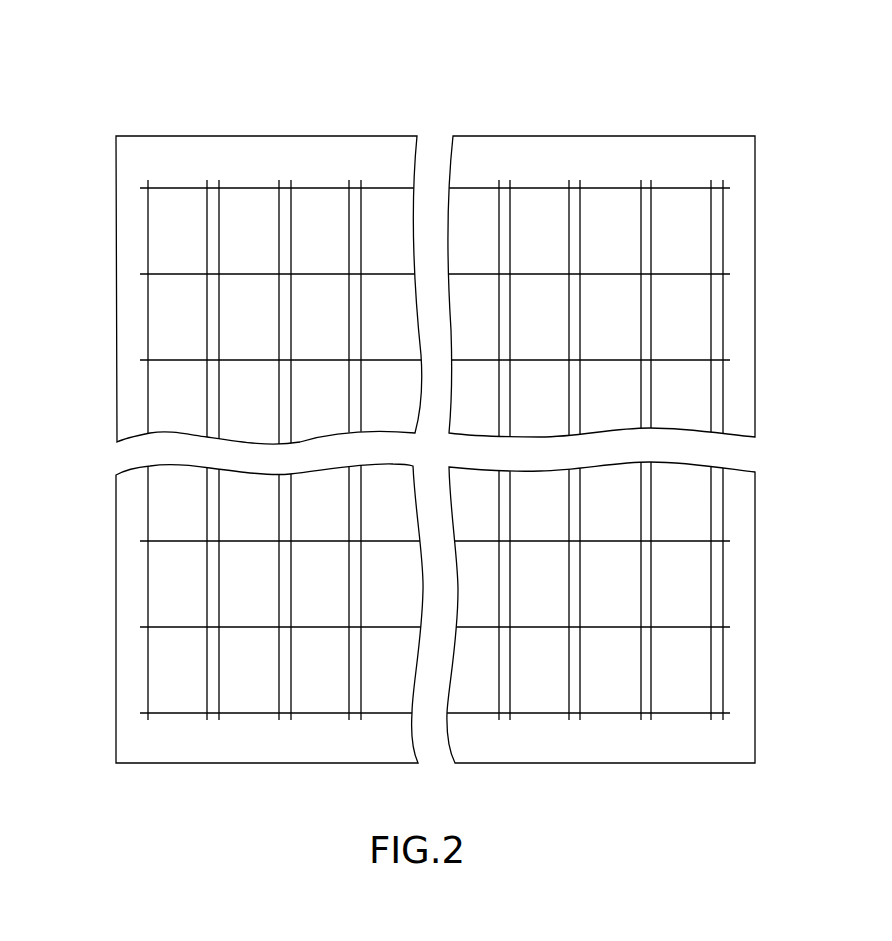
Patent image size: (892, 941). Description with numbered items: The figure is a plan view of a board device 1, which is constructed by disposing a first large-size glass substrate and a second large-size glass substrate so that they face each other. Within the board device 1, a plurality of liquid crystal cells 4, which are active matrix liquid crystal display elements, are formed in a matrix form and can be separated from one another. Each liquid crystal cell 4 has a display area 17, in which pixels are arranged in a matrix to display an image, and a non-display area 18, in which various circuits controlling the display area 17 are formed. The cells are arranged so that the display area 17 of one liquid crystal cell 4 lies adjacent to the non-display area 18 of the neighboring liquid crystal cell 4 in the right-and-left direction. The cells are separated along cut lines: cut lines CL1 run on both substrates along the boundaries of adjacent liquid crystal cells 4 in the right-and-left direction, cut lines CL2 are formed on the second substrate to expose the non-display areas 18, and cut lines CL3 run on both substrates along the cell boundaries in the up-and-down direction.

The board device 1 is at (442, 66).
The liquid crystal cell 4 is at (186, 187).
The display area 17 is at (168, 197).
The non-display area 18 is at (215, 197).
The cut line CL1 is at (218, 222).
The cut line CL2 is at (207, 243).
The cut line CL3 is at (178, 273).